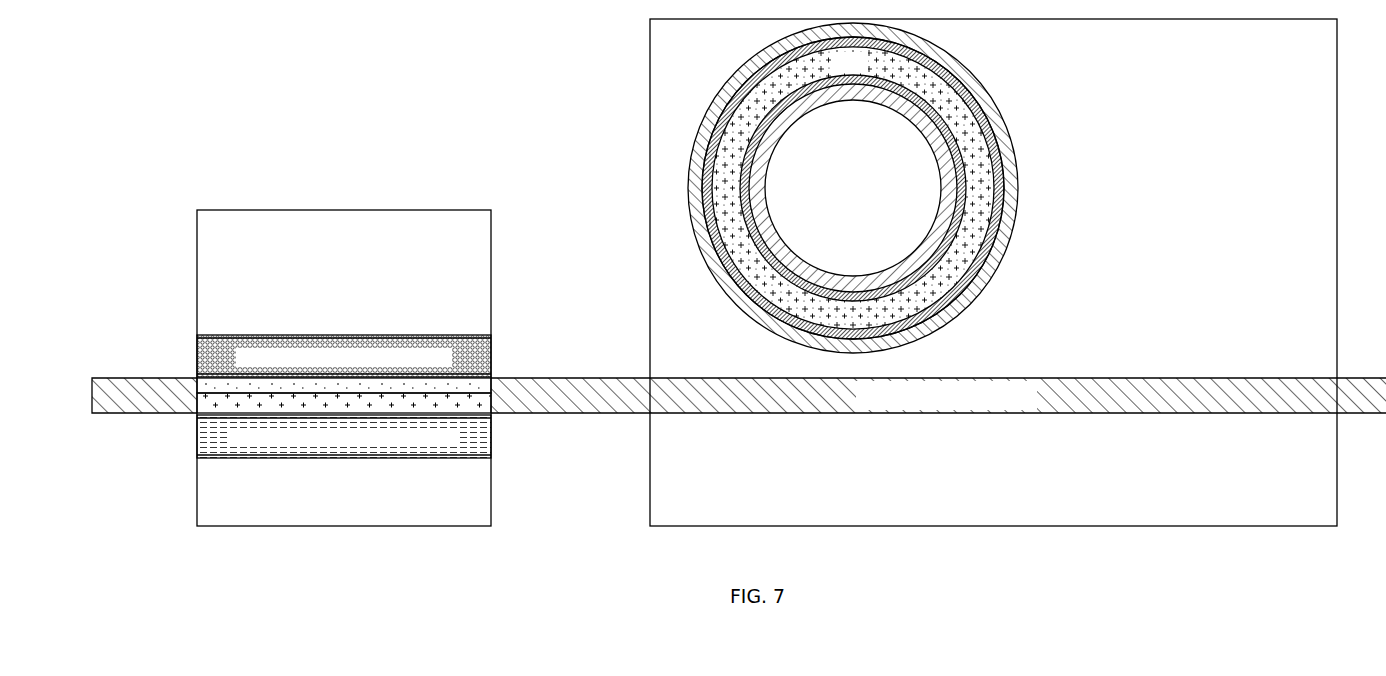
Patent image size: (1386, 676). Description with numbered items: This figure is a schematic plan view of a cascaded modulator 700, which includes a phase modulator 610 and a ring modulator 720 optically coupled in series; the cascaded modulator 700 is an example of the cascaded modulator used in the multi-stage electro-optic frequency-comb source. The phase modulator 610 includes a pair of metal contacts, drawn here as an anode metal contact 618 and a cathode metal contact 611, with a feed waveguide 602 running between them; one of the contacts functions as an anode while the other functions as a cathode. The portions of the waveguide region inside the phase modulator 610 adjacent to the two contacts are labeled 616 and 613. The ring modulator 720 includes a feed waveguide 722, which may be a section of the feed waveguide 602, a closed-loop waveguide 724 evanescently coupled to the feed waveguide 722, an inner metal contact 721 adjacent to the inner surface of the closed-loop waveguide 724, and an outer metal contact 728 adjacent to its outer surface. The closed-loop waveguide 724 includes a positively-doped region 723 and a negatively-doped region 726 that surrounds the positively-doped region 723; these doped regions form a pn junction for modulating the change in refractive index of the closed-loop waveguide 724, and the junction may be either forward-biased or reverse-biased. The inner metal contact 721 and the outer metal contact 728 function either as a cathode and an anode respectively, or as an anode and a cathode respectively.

The cascaded modulator 700 is at (181, 136).
The phase modulator 610 is at (437, 244).
The metal contact 618 is at (450, 366).
The cathode metal contact 611 is at (458, 446).
The negatively-doped region of phase modulator 616 is at (197, 378).
The positively-doped region of phase modulator 613 is at (197, 411).
The feed waveguide 602 is at (548, 413).
The feed waveguide 722 is at (1018, 395).
The ring modulator 720 is at (1073, 514).
The outer metal contact 728 is at (985, 92).
The negatively-doped region 726 is at (996, 138).
The closed-loop waveguide 724 is at (866, 70).
The positively-doped region 723 is at (965, 220).
The inner metal contact 721 is at (850, 101).